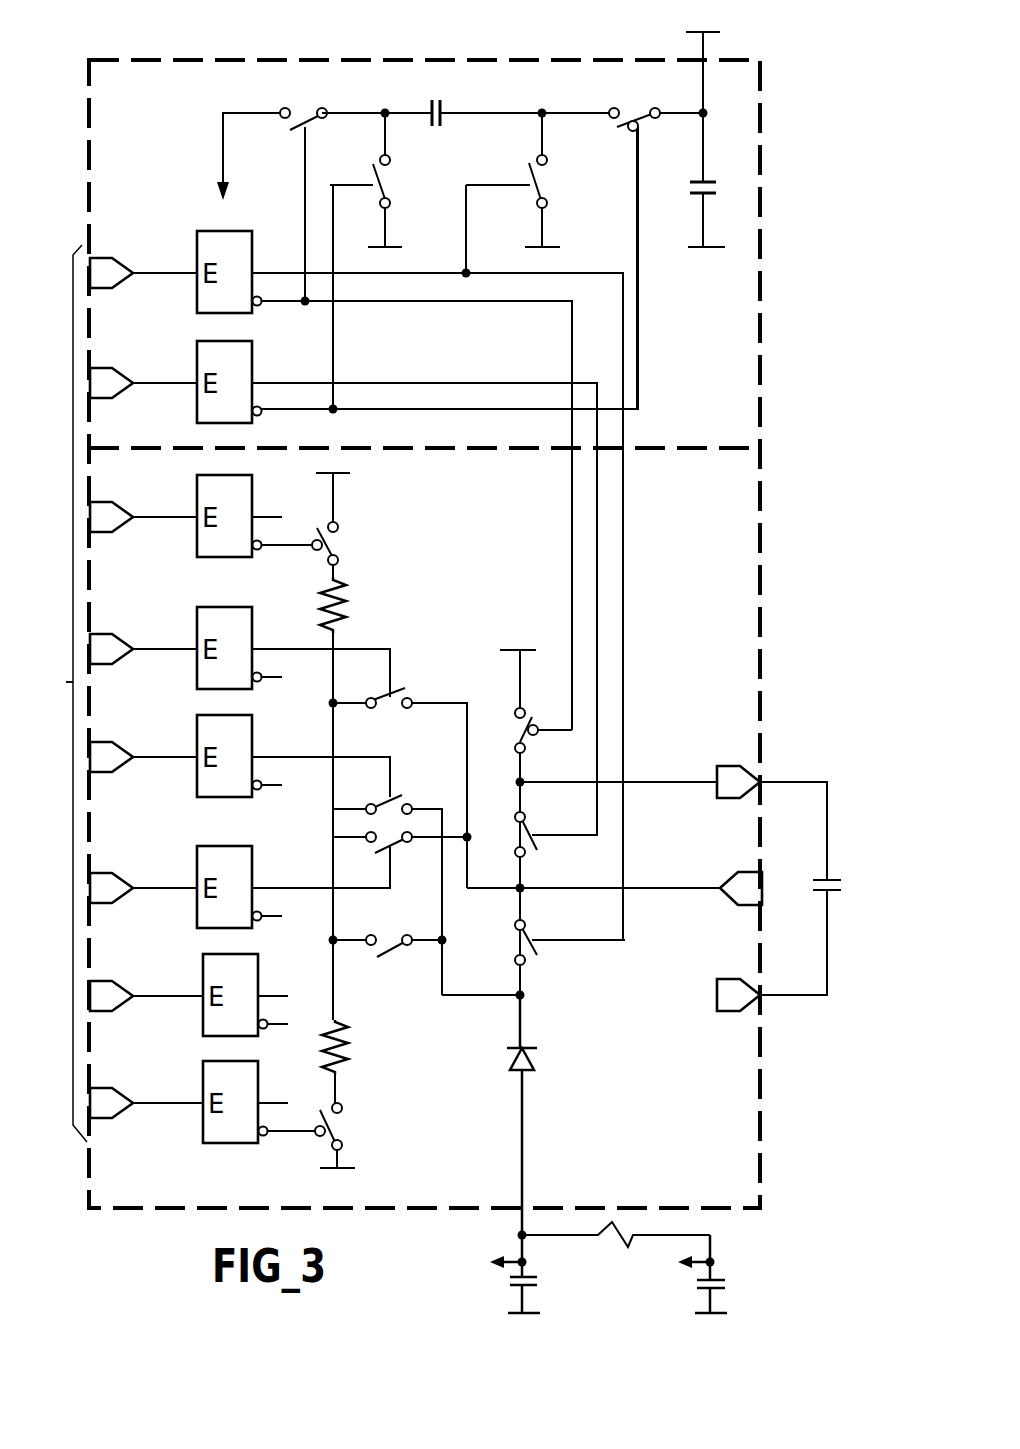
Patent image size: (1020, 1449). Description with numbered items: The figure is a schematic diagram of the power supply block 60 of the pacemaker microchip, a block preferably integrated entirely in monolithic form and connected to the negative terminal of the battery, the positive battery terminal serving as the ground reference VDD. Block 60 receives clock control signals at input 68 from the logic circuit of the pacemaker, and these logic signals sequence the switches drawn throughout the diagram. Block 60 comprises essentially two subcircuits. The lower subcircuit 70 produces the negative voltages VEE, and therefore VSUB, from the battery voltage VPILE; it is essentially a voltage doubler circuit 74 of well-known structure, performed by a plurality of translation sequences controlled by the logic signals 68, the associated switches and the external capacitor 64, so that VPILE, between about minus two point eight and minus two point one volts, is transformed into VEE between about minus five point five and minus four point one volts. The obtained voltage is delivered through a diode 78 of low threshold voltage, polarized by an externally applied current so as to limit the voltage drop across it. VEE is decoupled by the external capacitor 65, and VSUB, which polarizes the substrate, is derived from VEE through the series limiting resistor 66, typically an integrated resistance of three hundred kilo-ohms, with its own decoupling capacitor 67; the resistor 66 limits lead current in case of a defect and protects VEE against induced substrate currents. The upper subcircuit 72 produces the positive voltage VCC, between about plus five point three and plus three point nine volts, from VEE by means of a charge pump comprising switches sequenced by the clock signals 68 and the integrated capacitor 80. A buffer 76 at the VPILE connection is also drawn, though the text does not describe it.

The power supply block 60 is at (774, 52).
The external capacitor 64 is at (823, 877).
The decoupling capacitor 65 is at (510, 1283).
The series limiting resistor 66 is at (612, 1222).
The decoupling capacitor 67 is at (725, 1285).
The input for clock control signals 68 is at (62, 693).
The subcircuit producing negative voltages 70 is at (760, 573).
The subcircuit producing positive voltages 72 is at (760, 313).
The voltage doubler circuit 74 is at (500, 598).
The input buffer 76 is at (733, 868).
The diode 78 is at (535, 1062).
The integrated capacitor 80 is at (443, 124).